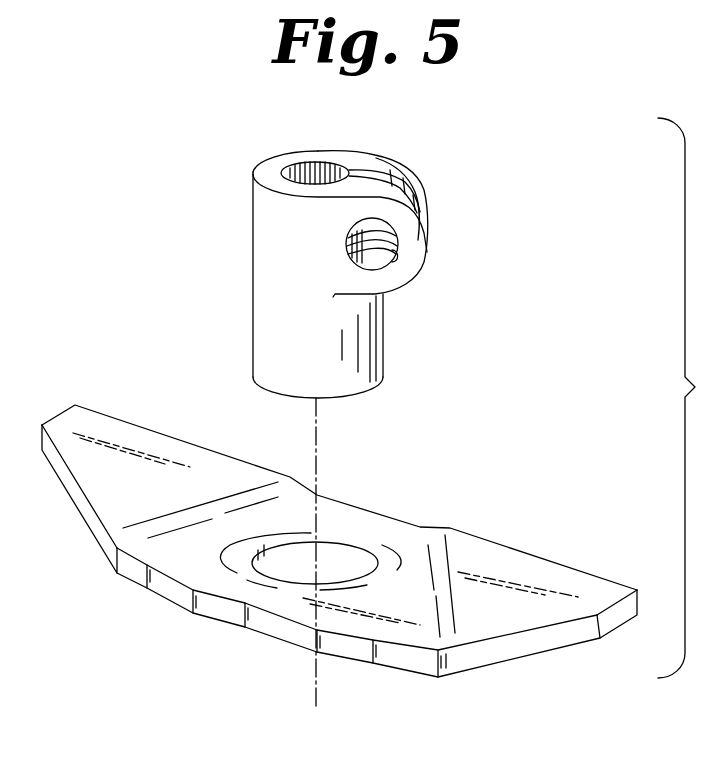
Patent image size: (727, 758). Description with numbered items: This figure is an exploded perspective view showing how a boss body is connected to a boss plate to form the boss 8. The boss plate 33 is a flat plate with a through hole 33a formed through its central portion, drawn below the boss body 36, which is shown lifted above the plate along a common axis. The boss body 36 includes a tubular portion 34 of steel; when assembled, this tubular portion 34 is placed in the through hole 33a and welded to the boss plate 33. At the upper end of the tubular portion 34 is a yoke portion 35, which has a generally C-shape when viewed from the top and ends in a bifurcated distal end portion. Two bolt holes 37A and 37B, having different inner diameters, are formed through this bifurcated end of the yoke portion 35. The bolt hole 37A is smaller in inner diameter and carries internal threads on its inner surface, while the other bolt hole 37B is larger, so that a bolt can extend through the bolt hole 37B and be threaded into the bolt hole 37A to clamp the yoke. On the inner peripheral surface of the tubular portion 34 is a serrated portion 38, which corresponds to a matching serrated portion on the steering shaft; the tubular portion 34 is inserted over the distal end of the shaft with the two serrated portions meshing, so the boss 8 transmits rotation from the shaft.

The boss 8 is at (533, 242).
The boss plate 33 is at (339, 542).
The through hole 33a is at (293, 578).
The tubular portion 34 is at (253, 333).
The yoke portion 35 is at (384, 203).
The boss body 36 is at (217, 212).
The bolt hole 37A is at (364, 218).
The bolt hole 37B is at (396, 258).
The serrated portion 38 is at (315, 162).